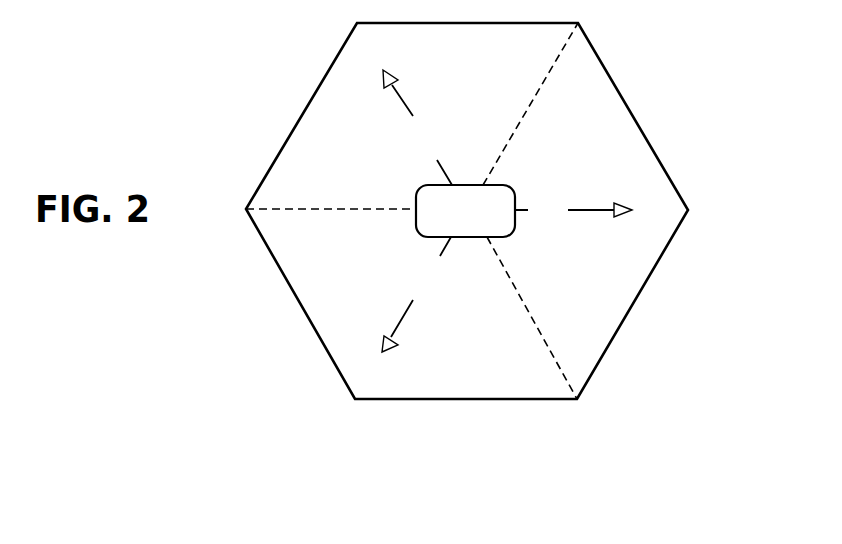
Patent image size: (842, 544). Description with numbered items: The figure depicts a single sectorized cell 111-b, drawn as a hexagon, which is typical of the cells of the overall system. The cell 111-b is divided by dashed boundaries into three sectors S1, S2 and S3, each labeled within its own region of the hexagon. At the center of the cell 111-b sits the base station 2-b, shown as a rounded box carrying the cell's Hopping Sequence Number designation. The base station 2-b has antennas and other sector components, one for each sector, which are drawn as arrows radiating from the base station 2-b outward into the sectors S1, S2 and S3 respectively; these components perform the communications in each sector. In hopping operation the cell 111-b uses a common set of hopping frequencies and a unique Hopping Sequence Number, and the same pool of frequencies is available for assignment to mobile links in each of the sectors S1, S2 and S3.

The base station 2-b is at (515, 200).
The sectorized cell 111-b is at (623, 322).
The sector S1 is at (402, 294).
The sector S2 is at (399, 116).
The sector S3 is at (590, 232).